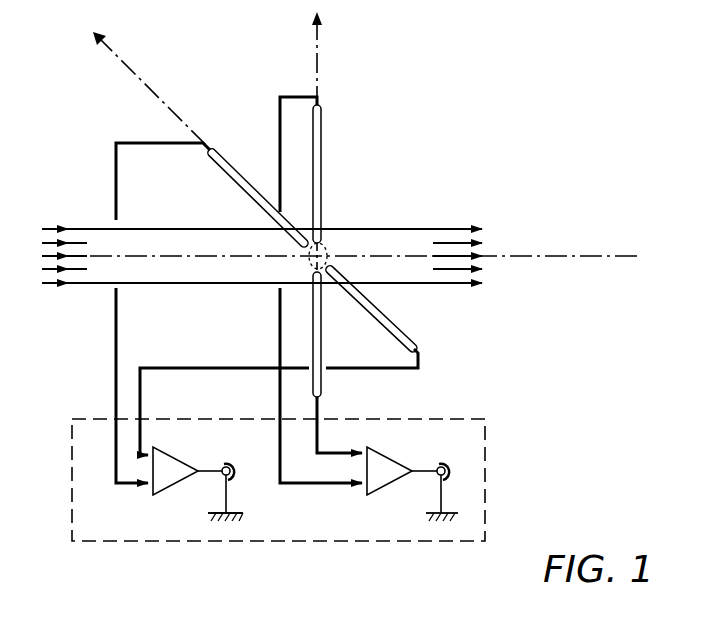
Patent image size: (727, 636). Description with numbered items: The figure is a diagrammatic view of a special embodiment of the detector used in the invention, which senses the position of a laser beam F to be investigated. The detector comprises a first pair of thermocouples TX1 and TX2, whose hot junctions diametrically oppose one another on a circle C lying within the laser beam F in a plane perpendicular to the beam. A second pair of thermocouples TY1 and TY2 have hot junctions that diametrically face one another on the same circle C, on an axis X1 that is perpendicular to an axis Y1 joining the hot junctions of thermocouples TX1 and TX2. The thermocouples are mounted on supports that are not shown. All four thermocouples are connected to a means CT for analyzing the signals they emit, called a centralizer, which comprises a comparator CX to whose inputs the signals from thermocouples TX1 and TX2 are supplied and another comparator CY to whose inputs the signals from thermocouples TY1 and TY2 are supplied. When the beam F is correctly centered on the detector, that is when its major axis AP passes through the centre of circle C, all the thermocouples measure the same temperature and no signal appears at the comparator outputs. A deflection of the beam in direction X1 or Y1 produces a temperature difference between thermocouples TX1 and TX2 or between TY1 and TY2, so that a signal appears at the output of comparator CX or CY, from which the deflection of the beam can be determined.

The laser beam F is at (83, 229).
The major axis AP is at (575, 222).
The axis X1 is at (130, 84).
The axis Y1 is at (331, 142).
The circle C is at (330, 246).
The thermocouple TX1 is at (232, 168).
The thermocouple TX2 is at (400, 331).
The thermocouple TY1 is at (321, 385).
The thermocouple TY2 is at (320, 127).
The centralizer CT is at (172, 541).
The comparator CX is at (170, 475).
The comparator CY is at (388, 470).